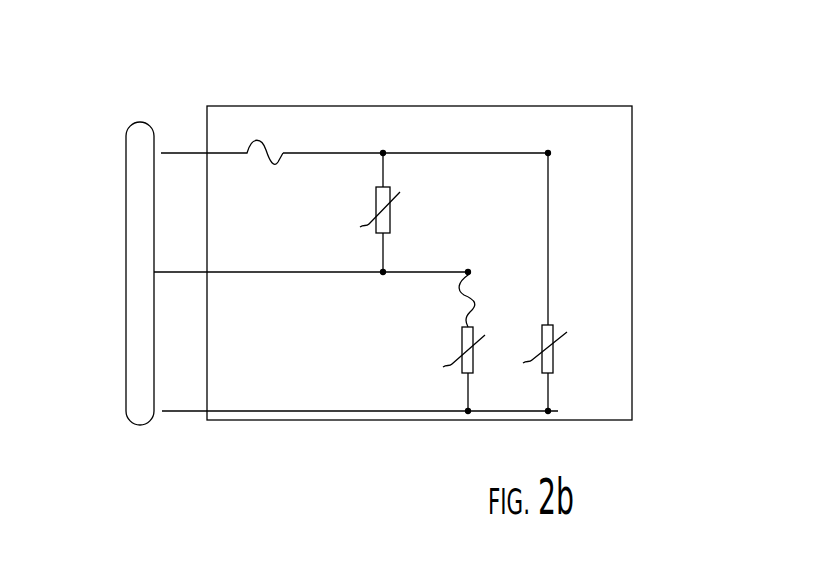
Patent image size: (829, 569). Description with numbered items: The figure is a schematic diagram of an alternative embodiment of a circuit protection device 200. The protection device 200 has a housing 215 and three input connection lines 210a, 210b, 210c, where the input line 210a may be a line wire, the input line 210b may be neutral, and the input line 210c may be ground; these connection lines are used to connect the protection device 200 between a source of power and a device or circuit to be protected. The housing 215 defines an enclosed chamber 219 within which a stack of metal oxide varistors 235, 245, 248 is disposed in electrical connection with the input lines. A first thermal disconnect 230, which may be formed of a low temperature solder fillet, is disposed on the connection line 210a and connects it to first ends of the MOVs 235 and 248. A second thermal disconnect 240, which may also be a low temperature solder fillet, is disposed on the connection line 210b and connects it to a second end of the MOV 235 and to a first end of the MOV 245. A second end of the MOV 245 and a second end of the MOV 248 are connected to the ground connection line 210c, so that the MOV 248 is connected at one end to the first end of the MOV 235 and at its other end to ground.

The circuit protection device 200 is at (382, 234).
The input connection line 210a is at (183, 153).
The input connection line 210b is at (178, 272).
The input connection line 210c is at (188, 411).
The housing 215 is at (607, 106).
The enclosed chamber 219 is at (601, 250).
The first thermal disconnect 230 is at (274, 129).
The metal oxide varistor 235 is at (395, 180).
The second thermal disconnect 240 is at (480, 285).
The metal oxide varistor 245 is at (453, 376).
The metal oxide varistor 248 is at (561, 375).